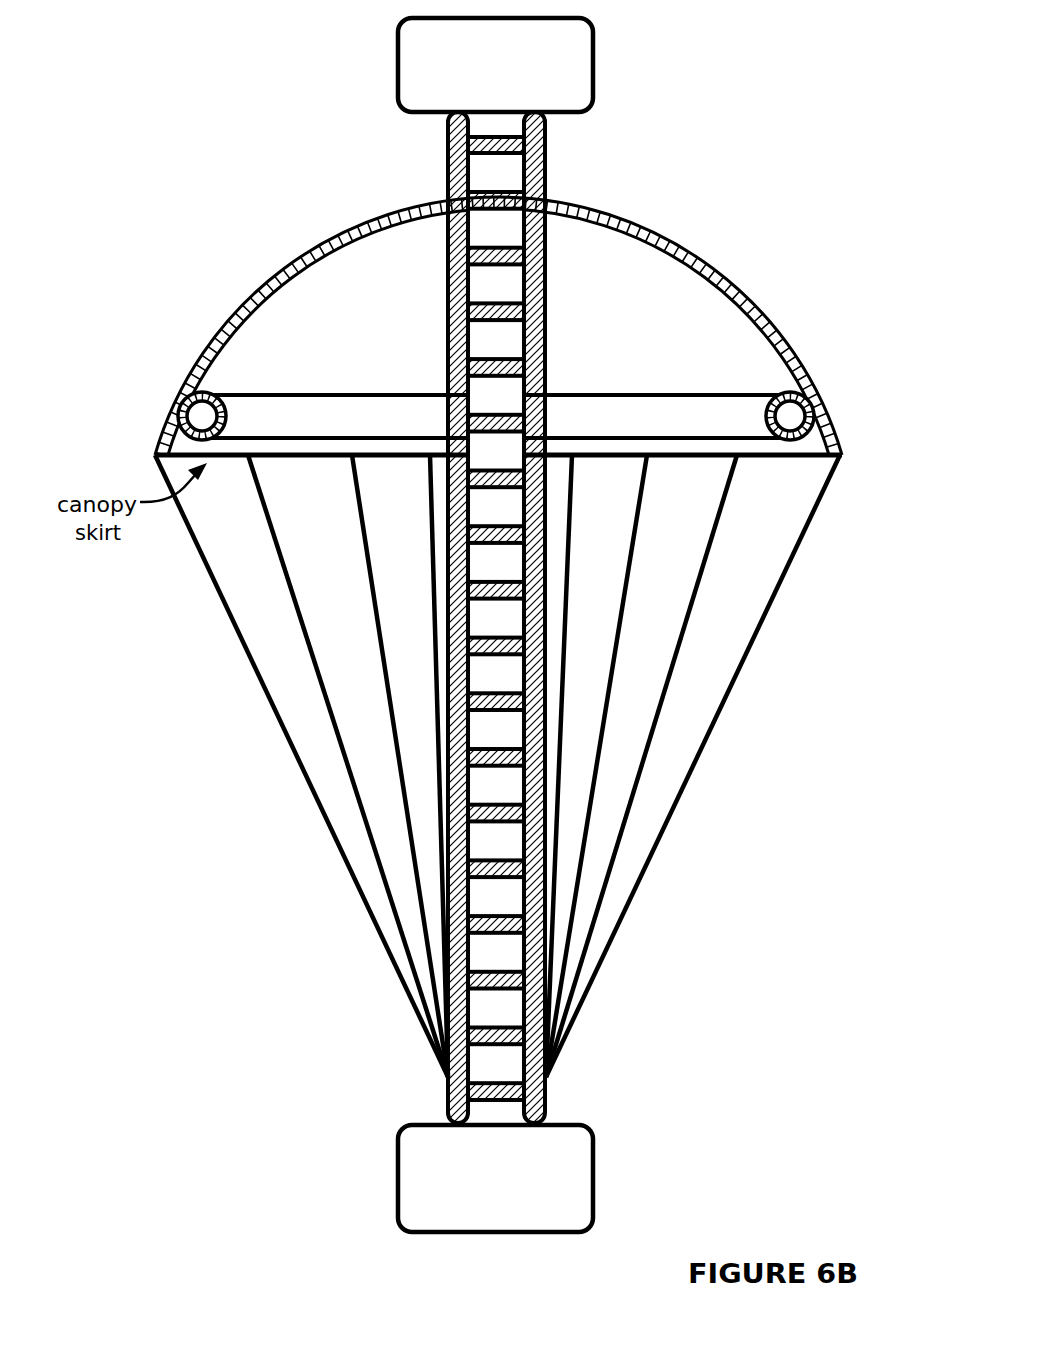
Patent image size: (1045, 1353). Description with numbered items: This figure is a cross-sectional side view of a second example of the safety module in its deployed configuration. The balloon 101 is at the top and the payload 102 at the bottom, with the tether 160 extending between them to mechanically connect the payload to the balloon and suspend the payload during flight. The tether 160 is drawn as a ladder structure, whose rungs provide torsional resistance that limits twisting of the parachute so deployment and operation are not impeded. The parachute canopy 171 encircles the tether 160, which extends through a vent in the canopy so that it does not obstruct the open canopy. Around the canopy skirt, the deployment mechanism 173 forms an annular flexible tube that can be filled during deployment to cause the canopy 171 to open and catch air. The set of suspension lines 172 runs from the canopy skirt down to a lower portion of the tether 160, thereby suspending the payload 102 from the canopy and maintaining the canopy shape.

The balloon 101 is at (513, 92).
The payload 102 is at (515, 1204).
The tether 160 is at (594, 160).
The canopy 171 is at (407, 302).
The set of suspension lines 172 is at (184, 678).
The deployment mechanism 173 is at (320, 431).